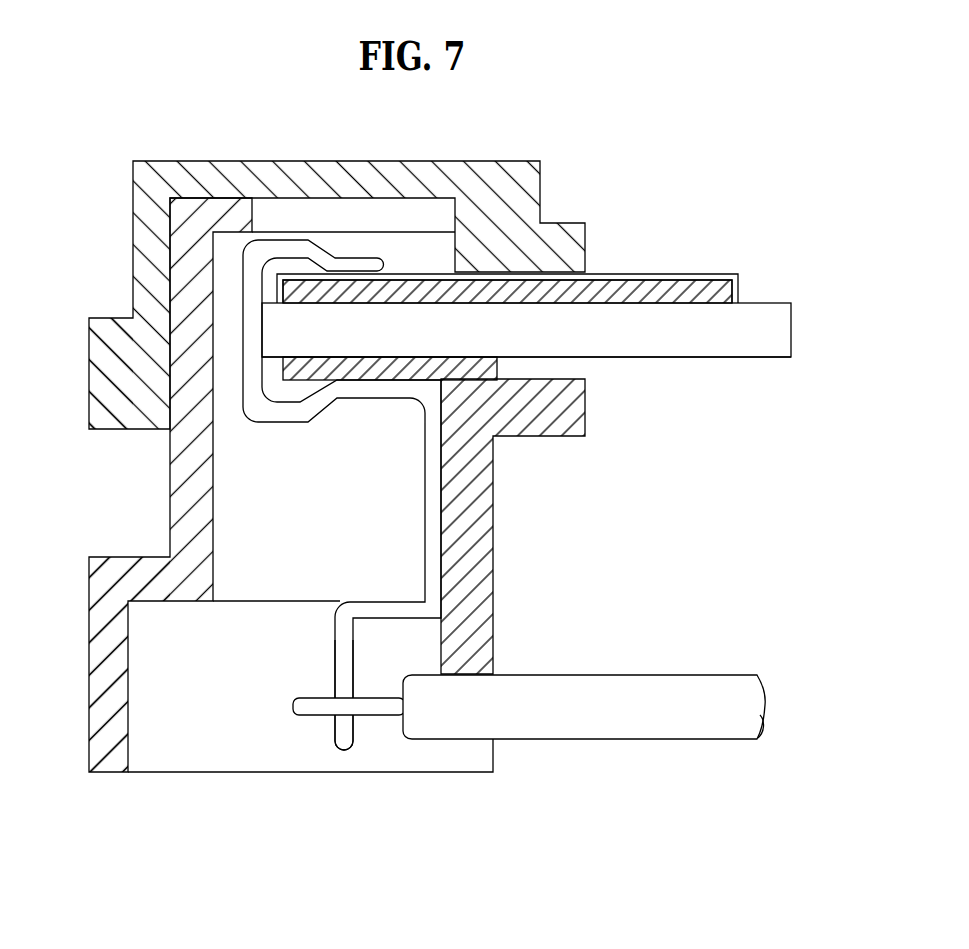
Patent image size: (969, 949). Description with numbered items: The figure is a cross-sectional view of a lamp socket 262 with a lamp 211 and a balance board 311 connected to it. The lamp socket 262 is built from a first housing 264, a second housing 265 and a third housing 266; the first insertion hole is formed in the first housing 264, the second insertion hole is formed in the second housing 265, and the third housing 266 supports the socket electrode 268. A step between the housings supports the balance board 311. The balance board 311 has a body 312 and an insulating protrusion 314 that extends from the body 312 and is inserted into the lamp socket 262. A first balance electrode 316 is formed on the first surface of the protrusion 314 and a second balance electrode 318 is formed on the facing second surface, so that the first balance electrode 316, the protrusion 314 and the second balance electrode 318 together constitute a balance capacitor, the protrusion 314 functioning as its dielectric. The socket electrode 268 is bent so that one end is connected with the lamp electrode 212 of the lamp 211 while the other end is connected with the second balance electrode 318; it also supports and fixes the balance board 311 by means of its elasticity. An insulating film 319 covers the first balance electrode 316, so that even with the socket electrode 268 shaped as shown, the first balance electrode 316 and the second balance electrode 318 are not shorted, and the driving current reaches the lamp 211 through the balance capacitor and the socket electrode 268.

The cable 211 is at (642, 720).
The lamp electrode 212 is at (383, 706).
The lamp socket 262 is at (605, 156).
The first housing 264 is at (103, 365).
The second housing 265 is at (102, 692).
The third housing 266 is at (233, 485).
The socket electrode 268 is at (342, 724).
The balance board 311 is at (552, 282).
The body 312 is at (776, 339).
The protrusion 314 is at (572, 343).
The first balance electrode 316 is at (742, 291).
The second balance electrode 318 is at (482, 368).
The insulating film 319 is at (691, 272).